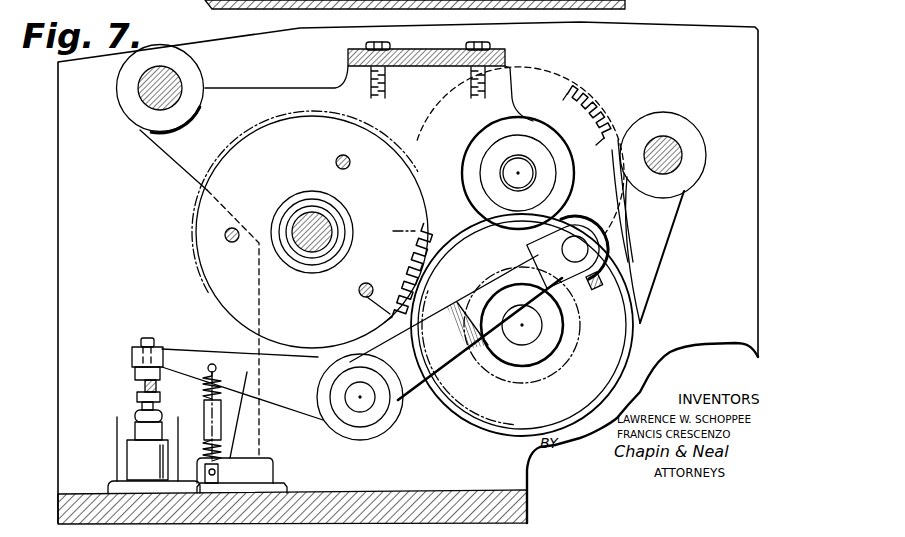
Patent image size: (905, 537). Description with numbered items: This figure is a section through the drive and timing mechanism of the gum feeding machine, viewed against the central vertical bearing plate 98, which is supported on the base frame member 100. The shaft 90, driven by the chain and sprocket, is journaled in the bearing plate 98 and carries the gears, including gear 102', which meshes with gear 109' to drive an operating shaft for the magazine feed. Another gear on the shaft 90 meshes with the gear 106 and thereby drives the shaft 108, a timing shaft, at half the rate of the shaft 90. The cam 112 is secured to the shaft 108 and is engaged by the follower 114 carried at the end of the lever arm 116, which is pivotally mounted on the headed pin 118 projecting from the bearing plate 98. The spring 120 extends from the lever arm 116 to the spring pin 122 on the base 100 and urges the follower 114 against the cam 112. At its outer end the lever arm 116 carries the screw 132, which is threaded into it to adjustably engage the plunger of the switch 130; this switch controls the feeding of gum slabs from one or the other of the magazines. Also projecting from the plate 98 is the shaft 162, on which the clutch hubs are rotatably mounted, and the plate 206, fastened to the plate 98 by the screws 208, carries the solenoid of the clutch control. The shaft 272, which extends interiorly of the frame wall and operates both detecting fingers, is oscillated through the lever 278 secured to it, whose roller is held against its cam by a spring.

The shaft 90 is at (534, 341).
The central vertical bearing plate 98 is at (175, 165).
The base frame member 100 is at (437, 489).
The gear 102' is at (408, 272).
The gear 106 is at (598, 108).
The shaft 108 is at (504, 164).
The gear 109' is at (312, 229).
The cam 112 is at (575, 185).
The follower 114 is at (607, 243).
The lever arm 116 is at (456, 373).
The headed pin 118 is at (366, 404).
The spring 120 is at (222, 403).
The spring pin 122 is at (218, 478).
The switch 130 is at (127, 451).
The screw 132 is at (140, 343).
The shaft 162 is at (181, 80).
The plate 206 is at (350, 52).
The screws 208 is at (468, 43).
The shaft 272 is at (667, 148).
The lever 278 is at (684, 207).